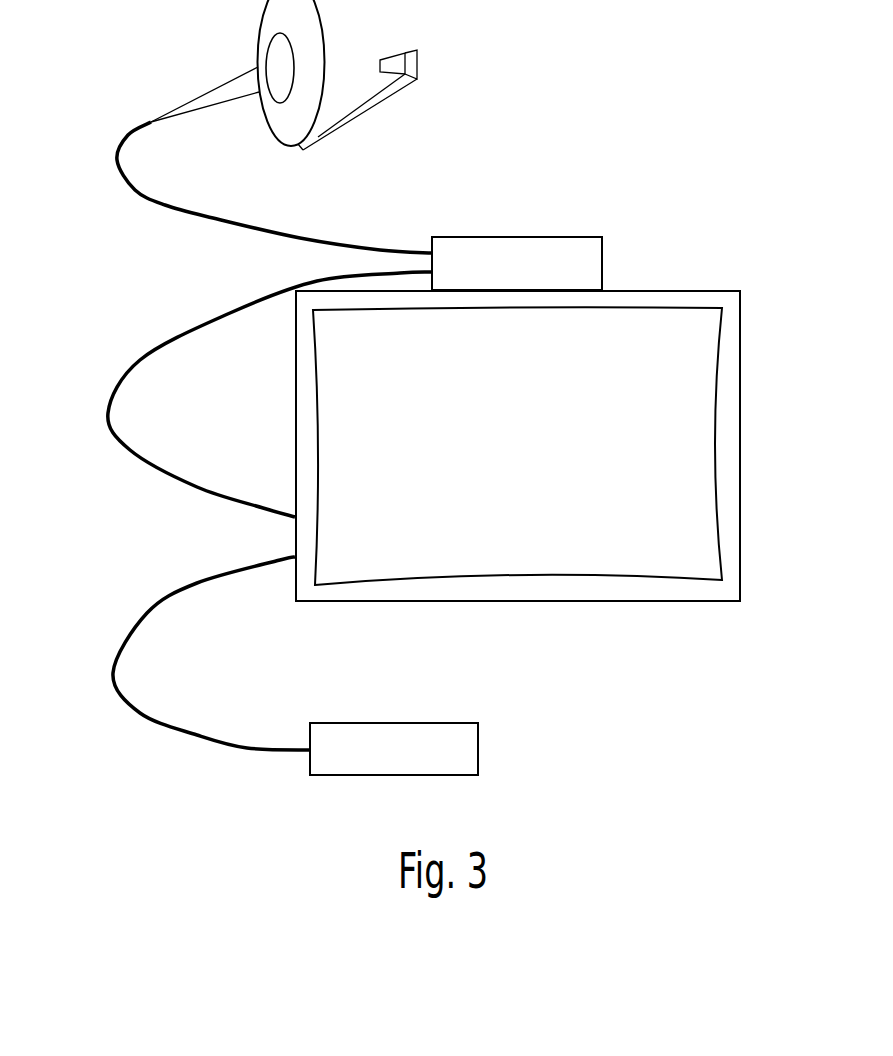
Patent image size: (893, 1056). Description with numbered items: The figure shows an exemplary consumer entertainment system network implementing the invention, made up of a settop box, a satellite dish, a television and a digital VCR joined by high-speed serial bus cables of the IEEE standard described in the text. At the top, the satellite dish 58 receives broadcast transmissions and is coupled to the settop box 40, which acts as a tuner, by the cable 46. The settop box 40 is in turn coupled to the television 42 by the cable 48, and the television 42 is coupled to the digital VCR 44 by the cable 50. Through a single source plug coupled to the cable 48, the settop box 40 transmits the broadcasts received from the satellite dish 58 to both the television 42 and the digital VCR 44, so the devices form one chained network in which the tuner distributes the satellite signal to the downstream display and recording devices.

The satellite dish 58 is at (320, 23).
The IEEE 1394-1995 cable 46 is at (117, 160).
The settop box 40 is at (602, 262).
The IEEE 1394-1995 cable 48 is at (108, 416).
The television 42 is at (740, 443).
The IEEE 1394-1995 cable 50 is at (113, 676).
The digital VCR 44 is at (478, 748).